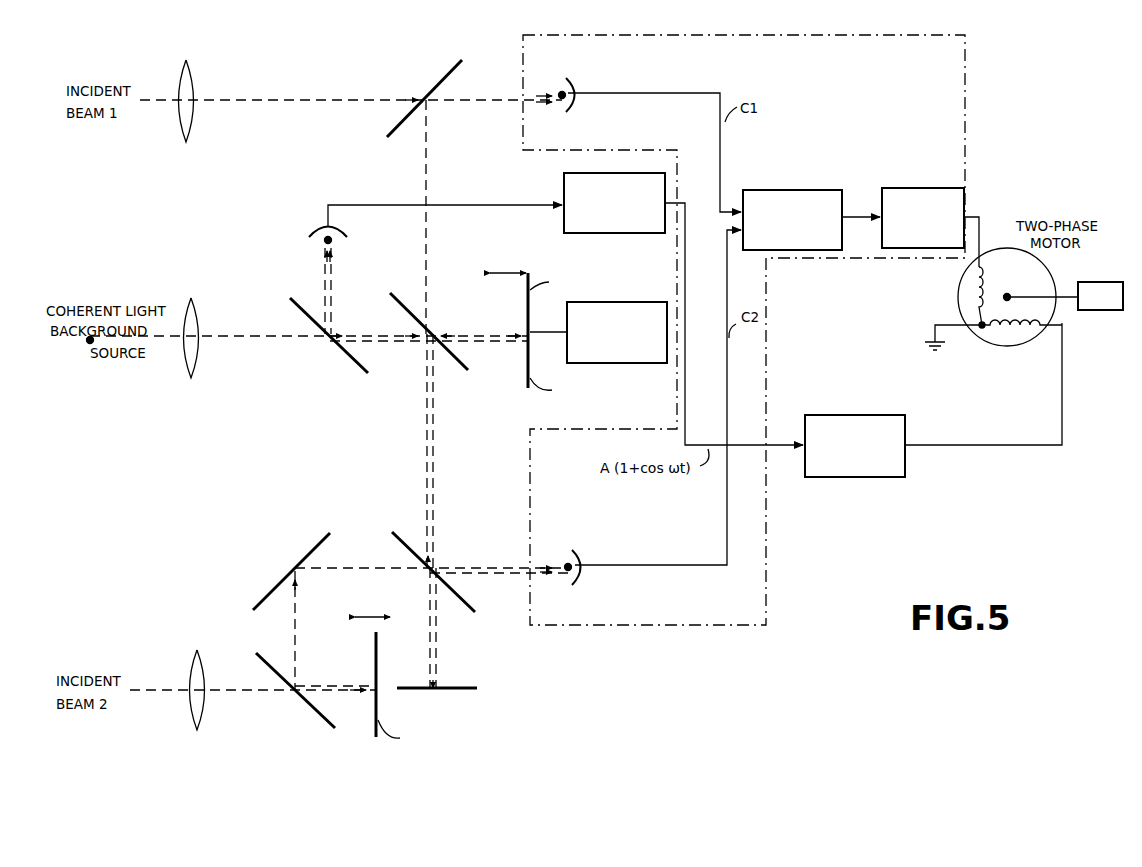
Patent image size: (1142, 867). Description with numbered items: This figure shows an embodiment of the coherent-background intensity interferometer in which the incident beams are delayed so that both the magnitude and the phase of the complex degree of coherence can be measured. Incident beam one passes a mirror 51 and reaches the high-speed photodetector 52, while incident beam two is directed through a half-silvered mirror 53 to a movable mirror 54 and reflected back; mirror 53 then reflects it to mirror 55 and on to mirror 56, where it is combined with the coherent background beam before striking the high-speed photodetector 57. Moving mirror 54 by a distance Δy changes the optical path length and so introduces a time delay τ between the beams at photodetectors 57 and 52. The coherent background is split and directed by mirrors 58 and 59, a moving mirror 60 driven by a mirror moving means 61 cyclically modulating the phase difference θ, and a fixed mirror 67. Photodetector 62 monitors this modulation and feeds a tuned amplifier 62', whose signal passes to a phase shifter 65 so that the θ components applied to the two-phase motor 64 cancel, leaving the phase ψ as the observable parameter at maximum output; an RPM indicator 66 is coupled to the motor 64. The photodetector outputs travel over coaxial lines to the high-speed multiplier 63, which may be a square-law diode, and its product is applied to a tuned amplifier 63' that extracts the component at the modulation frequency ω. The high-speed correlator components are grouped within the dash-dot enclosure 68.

The beam splitter mirror 51 is at (438, 83).
The photodetector 52 is at (573, 83).
The half-silvered mirror 53 is at (320, 716).
The mirror 54 is at (378, 656).
The mirror 55 is at (307, 553).
The mirror 56 is at (468, 616).
The photodetector 57 is at (582, 552).
The mirror 58 is at (338, 352).
The beam splitter mirror 59 is at (457, 367).
The moving mirror 60 is at (580, 325).
The mirror moving means 61 is at (640, 302).
The photodetector 62 is at (435, 224).
The tuned amplifier 62' is at (683, 309).
The multiplier 63 is at (811, 203).
The tuned amplifier 63' is at (927, 211).
The two-phase motor 64 is at (1052, 282).
The phase shifter 65 is at (862, 478).
The RPM indicator 66 is at (1095, 311).
The mirror 67 is at (476, 690).
The correlator enclosure 68 is at (766, 33).